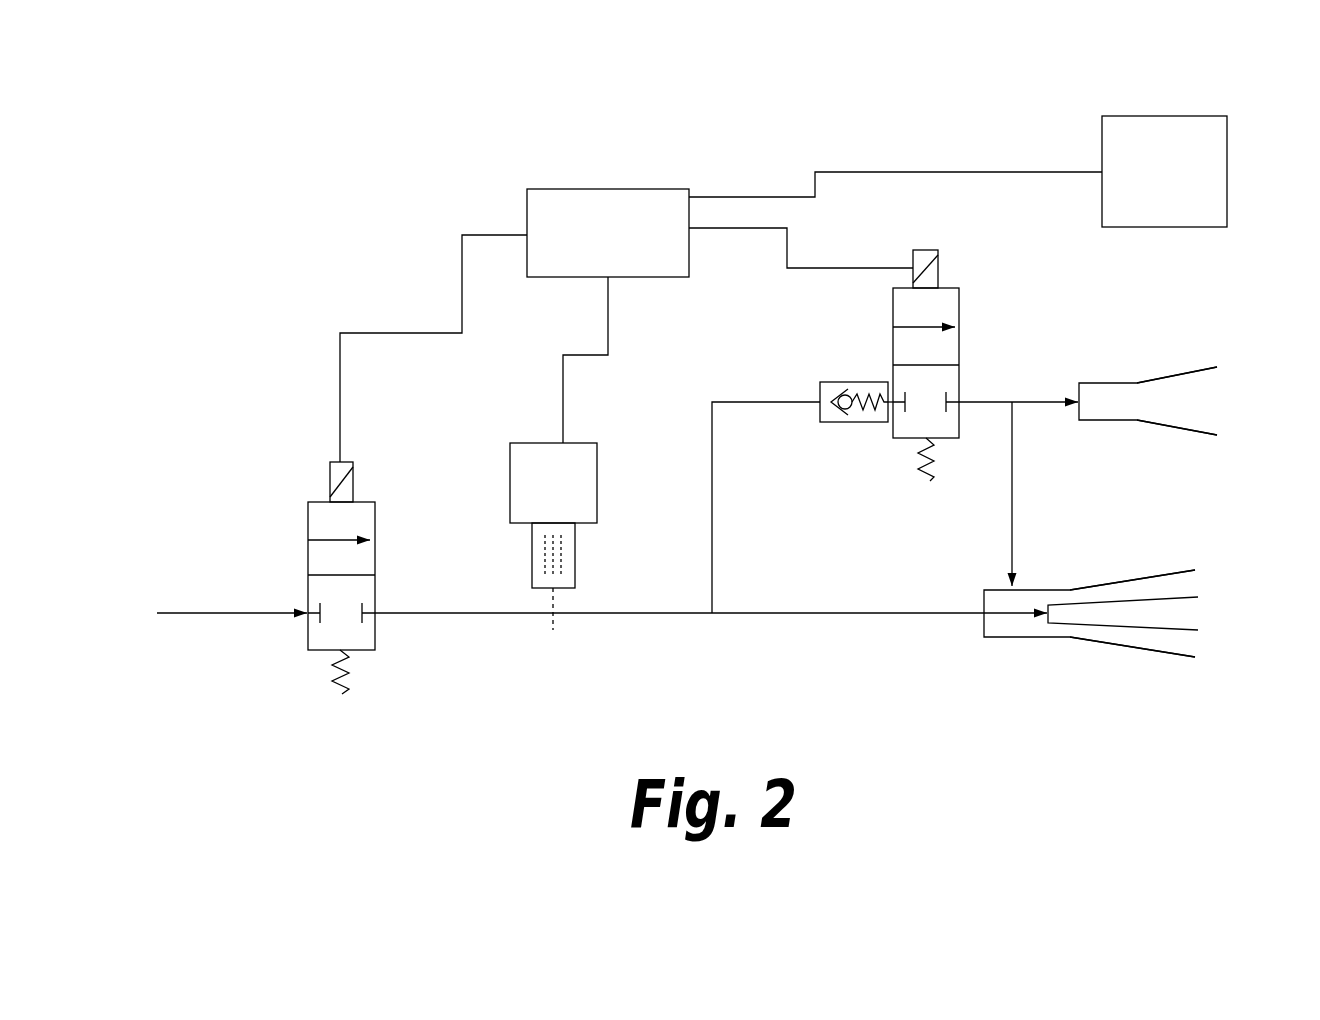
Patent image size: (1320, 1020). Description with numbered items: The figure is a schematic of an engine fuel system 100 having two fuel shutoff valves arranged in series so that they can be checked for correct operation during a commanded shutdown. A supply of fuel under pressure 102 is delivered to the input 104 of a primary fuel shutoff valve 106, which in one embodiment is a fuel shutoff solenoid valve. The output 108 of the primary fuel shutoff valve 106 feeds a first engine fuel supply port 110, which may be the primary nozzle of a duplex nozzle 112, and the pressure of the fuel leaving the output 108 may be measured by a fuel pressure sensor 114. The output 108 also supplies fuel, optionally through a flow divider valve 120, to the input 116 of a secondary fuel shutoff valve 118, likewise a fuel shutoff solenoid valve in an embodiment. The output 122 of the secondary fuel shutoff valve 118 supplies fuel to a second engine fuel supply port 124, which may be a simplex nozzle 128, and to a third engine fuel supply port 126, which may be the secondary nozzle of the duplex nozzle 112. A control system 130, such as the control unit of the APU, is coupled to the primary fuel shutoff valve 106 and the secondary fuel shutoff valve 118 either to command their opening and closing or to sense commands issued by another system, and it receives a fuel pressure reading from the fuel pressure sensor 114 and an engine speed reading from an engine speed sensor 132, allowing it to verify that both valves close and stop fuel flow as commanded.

The engine fuel system 100 is at (410, 252).
The supply of fuel under pressure 102 is at (196, 612).
The input of primary fuel shutoff valve 104 is at (302, 609).
The primary fuel shutoff valve 106 is at (333, 462).
The output of primary fuel shutoff valve 108 is at (385, 612).
The first engine fuel supply port 110 is at (1193, 617).
The duplex nozzle 112 is at (1088, 678).
The fuel pressure sensor 114 is at (540, 443).
The input of secondary fuel shutoff valve 116 is at (890, 397).
The secondary fuel shutoff valve 118 is at (923, 250).
The flow divider valve 120 is at (855, 422).
The output of secondary fuel shutoff valve 122 is at (963, 398).
The second engine fuel supply port 124 is at (1205, 403).
The third engine fuel supply port 126 is at (1195, 587).
The simplex nozzle 128 is at (1143, 450).
The control system 130 is at (598, 189).
The engine speed sensor 132 is at (1167, 227).